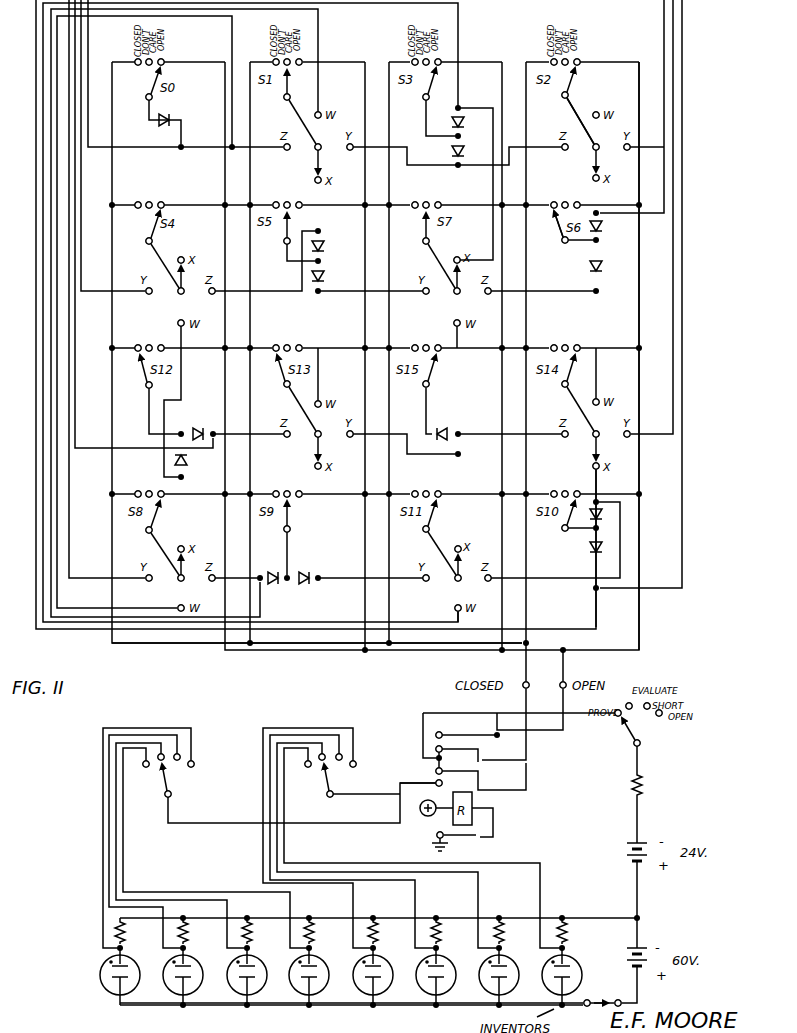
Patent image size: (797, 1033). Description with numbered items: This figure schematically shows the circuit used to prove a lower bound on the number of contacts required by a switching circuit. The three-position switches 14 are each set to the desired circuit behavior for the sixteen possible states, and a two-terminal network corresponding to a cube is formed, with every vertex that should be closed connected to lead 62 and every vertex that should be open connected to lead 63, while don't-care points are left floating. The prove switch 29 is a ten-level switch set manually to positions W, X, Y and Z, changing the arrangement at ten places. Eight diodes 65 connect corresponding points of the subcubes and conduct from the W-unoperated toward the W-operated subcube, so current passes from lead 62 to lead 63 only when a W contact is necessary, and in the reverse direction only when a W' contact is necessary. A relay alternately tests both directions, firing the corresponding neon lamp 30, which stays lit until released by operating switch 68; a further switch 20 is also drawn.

The prove switch 29 is at (348, 508).
The diode 65 is at (397, 357).
The three-position switch 14 is at (583, 173).
The lead 62 is at (186, 646).
The lead 63 is at (642, 626).
The evaluate-short-prove-open switch 20 is at (636, 729).
The indicating lamp 30 is at (368, 971).
The switch 68 is at (601, 996).